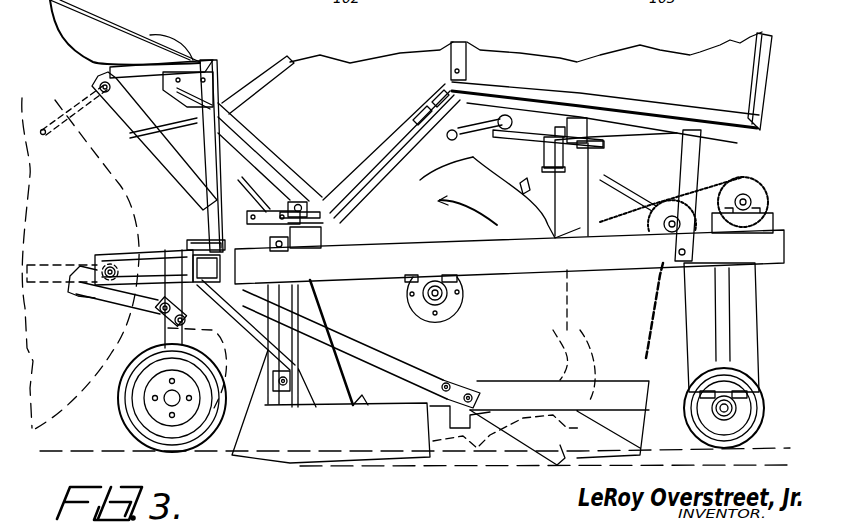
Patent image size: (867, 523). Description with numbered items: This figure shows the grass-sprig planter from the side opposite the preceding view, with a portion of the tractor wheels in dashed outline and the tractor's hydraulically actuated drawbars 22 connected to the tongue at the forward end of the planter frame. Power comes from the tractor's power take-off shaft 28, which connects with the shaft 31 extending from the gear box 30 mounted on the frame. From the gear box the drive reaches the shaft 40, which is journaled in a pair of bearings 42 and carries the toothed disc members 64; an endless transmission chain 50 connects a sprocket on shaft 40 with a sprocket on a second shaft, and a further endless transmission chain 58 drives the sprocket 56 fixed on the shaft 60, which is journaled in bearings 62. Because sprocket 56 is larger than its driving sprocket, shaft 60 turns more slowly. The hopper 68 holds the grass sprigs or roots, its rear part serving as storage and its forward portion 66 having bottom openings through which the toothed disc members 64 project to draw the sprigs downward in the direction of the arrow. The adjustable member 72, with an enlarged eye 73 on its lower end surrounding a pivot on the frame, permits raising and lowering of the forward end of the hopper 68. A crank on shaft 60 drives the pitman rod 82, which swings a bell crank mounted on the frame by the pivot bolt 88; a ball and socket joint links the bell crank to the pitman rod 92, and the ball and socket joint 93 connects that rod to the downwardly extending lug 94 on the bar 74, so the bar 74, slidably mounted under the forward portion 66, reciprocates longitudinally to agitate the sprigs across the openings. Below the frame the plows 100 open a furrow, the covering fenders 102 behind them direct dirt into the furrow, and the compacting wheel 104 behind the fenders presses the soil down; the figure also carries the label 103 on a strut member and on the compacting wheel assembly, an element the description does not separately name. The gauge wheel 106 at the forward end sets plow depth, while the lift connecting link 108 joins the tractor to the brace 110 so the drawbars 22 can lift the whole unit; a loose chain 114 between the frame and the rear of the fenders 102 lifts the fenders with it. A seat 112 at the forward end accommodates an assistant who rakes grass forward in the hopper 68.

The drawbars 22 is at (90, 262).
The power take-off shaft 28 is at (60, 290).
The gear box 30 is at (223, 338).
The shaft 31 is at (125, 300).
The shaft 40 is at (440, 293).
The bearings 42 is at (457, 312).
The endless transmission chain 50 is at (609, 228).
The sprocket 56 is at (750, 188).
The endless transmission chain 58 is at (704, 190).
The shaft 60 is at (748, 202).
The bearings 62 is at (772, 218).
The toothed disc members 64 is at (447, 238).
The forward portion 66 is at (270, 93).
The hopper 68 is at (779, 75).
The adjustable member 72 is at (240, 187).
The enlarged eye 73 is at (262, 226).
The bar 74 is at (437, 115).
The pitman rod 82 is at (658, 170).
The pivot bolt 88 is at (556, 133).
The pitman rod 92 is at (477, 130).
The ball and socket joint 93 is at (466, 87).
The lug 94 is at (475, 175).
The plows 100 is at (322, 455).
The covering fenders 102 is at (557, 445).
The strut / caster wheel 103 is at (398, 359).
The compacting wheel 104 is at (759, 396).
The gauge wheel 106 is at (127, 408).
The lift connecting link 108 is at (70, 100).
The brace 110 is at (163, 153).
The seat 112 is at (100, 40).
The chain 114 is at (652, 305).